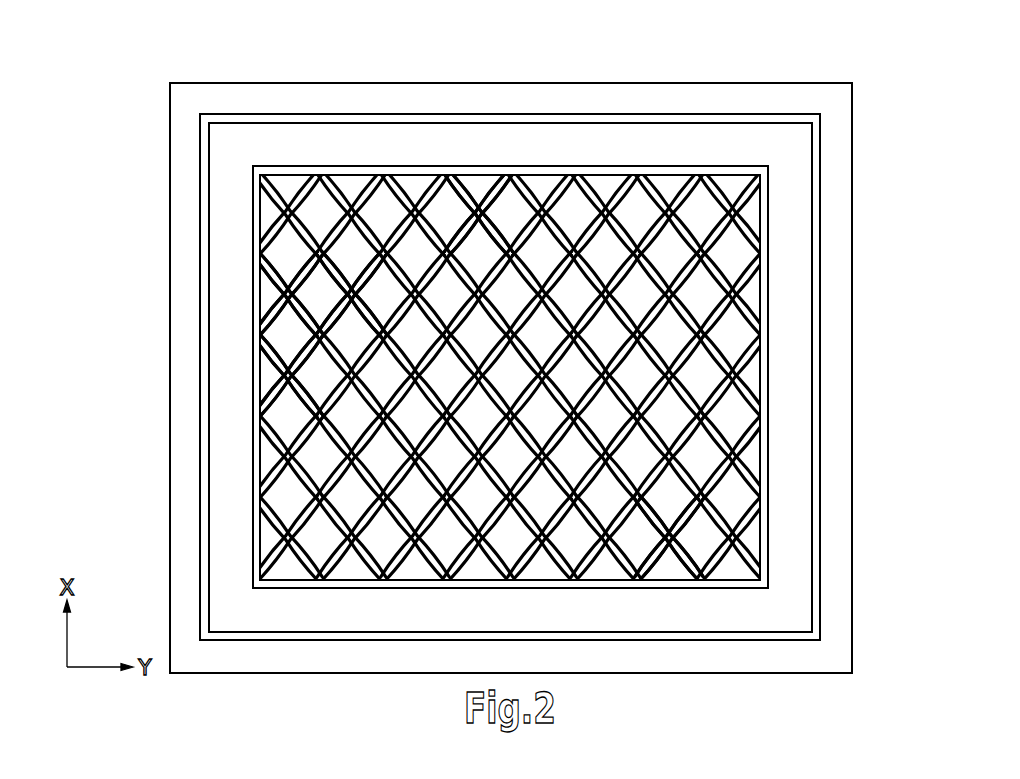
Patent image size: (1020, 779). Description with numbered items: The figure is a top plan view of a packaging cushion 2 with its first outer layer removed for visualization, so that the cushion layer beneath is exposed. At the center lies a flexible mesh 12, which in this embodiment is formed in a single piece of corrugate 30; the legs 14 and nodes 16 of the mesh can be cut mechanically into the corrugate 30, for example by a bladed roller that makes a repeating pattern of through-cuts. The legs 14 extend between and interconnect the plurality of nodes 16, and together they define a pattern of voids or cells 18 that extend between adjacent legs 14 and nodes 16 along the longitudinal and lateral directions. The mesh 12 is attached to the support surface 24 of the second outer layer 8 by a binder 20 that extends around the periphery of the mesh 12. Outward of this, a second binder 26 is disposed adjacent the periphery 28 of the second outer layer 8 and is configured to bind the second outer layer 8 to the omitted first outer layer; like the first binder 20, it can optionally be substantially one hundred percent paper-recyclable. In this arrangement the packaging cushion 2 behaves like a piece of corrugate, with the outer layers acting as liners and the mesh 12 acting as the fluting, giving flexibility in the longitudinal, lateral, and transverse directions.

The packaging cushion 2 is at (118, 110).
The second outer layer 8 is at (234, 72).
The flexible mesh 12 is at (352, 580).
The legs 14 is at (392, 285).
The nodes 16 is at (313, 256).
The cells 18 is at (538, 262).
The binder 20 is at (613, 166).
The support surface 24 is at (840, 192).
The second binder 26 is at (676, 118).
The periphery of the second outer layer 28 is at (791, 83).
The piece of corrugate 30 is at (647, 527).